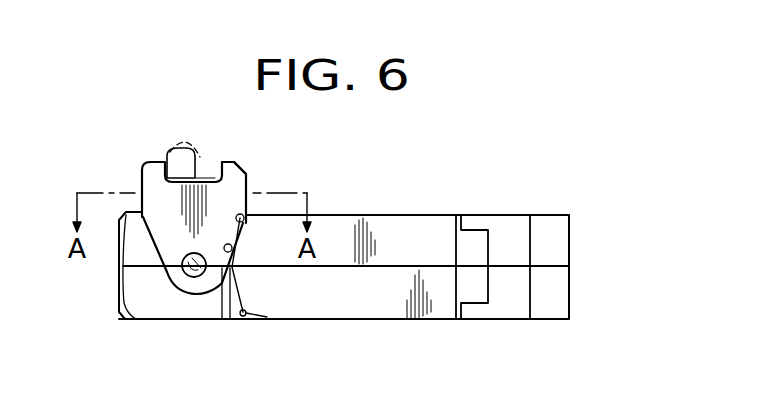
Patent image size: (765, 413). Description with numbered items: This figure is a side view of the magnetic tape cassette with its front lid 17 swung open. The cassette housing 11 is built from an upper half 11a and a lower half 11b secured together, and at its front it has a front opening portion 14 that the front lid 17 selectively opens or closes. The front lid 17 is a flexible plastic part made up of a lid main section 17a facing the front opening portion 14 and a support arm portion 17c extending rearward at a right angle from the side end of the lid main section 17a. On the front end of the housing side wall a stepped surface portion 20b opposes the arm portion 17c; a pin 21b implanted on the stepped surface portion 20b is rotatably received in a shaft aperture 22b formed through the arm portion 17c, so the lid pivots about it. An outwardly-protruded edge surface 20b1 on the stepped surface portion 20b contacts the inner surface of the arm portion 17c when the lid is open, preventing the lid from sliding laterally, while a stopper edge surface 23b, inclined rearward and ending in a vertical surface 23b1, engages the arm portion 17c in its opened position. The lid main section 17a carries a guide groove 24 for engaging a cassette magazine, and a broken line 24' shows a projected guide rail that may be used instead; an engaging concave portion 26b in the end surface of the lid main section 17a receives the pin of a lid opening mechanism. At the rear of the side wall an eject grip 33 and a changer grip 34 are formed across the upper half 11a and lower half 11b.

The cassette housing 11 is at (393, 267).
The upper half 11a is at (557, 239).
The lower half 11b is at (557, 291).
The front opening portion 14 is at (119, 276).
The front lid 17 is at (142, 183).
The lid main section 17a is at (232, 164).
The support arm portion 17c is at (232, 197).
The stepped surface portion 20b is at (158, 302).
The outwardly-protruded edge surface 20b1 is at (267, 317).
The pin 21b is at (243, 316).
The shaft aperture 22b is at (200, 278).
The stopper edge surface 23b is at (322, 305).
The vertical surface 23b1 is at (243, 224).
The guide groove 24 is at (150, 145).
The projected guide rail 24' is at (155, 117).
The engaging concave portion 26b is at (213, 173).
The eject grip 33 is at (529, 222).
The changer grip 34 is at (472, 236).